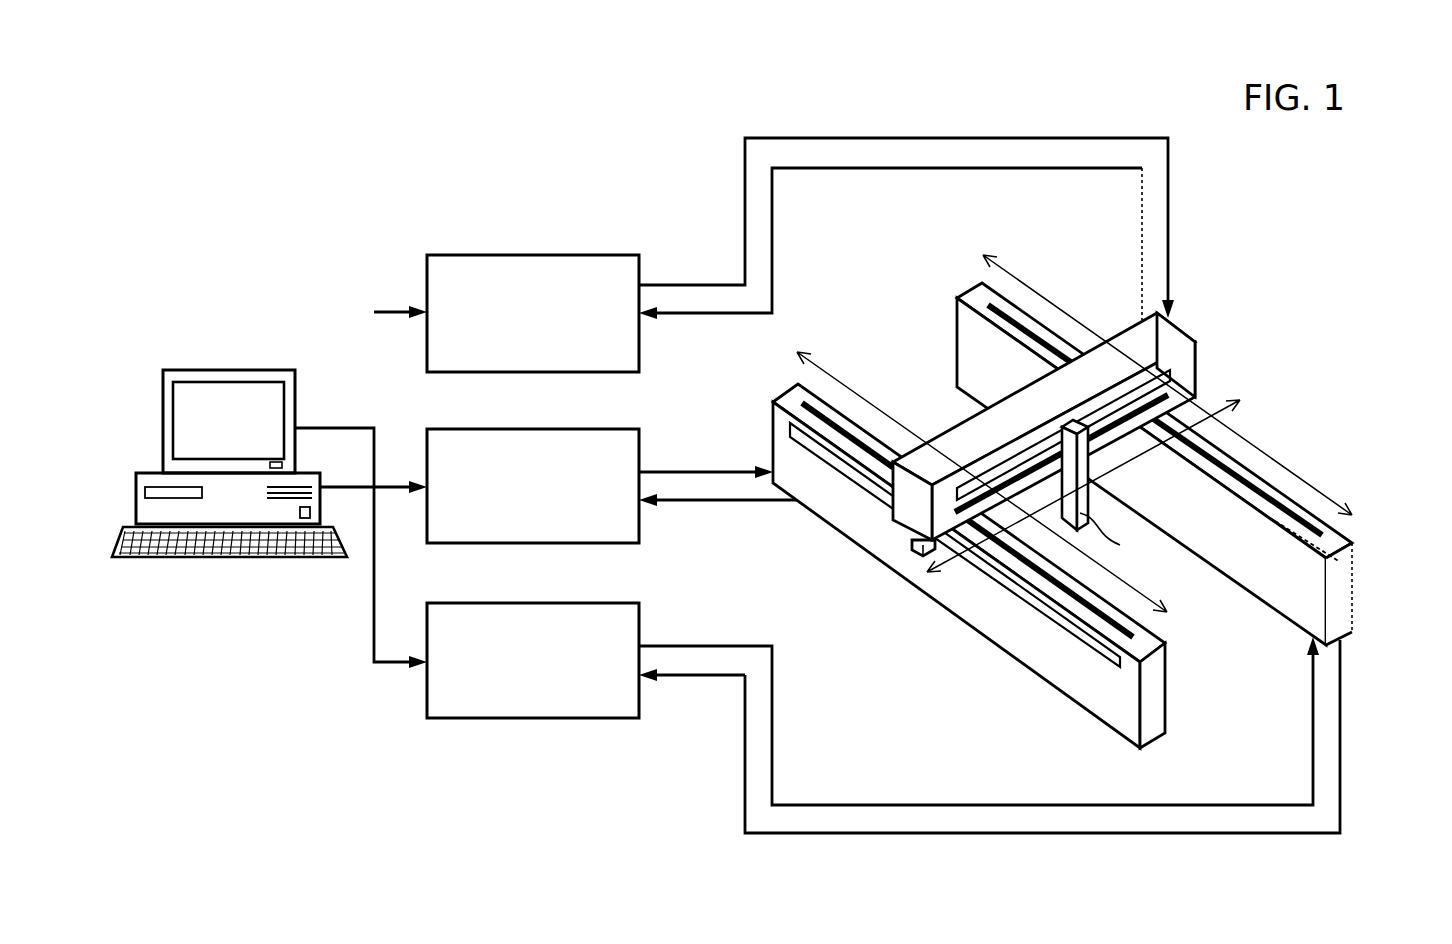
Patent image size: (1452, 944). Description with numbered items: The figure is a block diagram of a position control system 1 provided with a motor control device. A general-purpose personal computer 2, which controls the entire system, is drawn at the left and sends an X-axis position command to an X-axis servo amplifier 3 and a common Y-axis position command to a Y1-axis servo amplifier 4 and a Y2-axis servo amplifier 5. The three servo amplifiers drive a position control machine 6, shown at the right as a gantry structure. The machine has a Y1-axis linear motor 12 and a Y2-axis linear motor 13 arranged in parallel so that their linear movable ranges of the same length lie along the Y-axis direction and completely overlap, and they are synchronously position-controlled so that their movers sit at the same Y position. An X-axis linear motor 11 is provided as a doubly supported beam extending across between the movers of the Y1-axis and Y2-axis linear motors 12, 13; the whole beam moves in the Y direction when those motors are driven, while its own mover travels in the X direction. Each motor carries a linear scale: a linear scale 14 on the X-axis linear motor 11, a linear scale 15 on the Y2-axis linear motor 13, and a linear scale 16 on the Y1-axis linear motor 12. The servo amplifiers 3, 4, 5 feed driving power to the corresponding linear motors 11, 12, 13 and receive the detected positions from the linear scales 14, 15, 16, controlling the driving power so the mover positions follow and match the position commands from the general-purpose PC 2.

The position control system 1 is at (298, 190).
The general-purpose personal computer 2 is at (190, 368).
The X-axis servo amplifier 3 is at (502, 254).
The Y1-axis servo amplifier 4 is at (500, 429).
The Y2-axis servo amplifier 5 is at (503, 602).
The position control machine 6 is at (1252, 318).
The X-axis linear motor 11 is at (1020, 386).
The Y1-axis linear motor 12 is at (787, 388).
The Y2-axis linear motor 13 is at (972, 288).
The linear scale 14 is at (1015, 460).
The linear scale 15 is at (1345, 553).
The linear scale 16 is at (1047, 615).